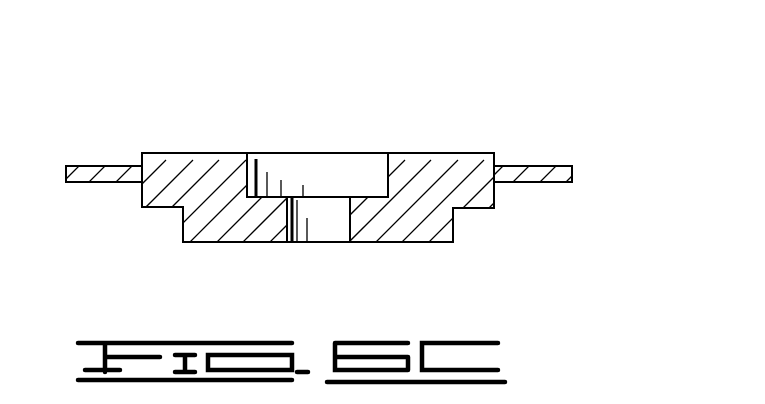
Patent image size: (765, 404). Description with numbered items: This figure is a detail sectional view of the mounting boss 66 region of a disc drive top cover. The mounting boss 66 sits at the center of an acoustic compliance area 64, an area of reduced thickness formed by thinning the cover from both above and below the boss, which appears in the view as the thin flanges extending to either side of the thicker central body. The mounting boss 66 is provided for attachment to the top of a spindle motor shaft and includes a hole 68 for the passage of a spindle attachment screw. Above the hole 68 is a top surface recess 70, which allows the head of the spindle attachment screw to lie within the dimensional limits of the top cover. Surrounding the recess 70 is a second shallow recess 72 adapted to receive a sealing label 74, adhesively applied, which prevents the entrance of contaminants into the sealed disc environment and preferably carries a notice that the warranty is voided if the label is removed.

The acoustic compliance area 64 is at (538, 160).
The mounting boss 66 is at (197, 153).
The hole 68 is at (325, 213).
The top surface recess 70 is at (287, 162).
The second shallow recess 72 is at (442, 153).
The sealing label 74 is at (333, 153).